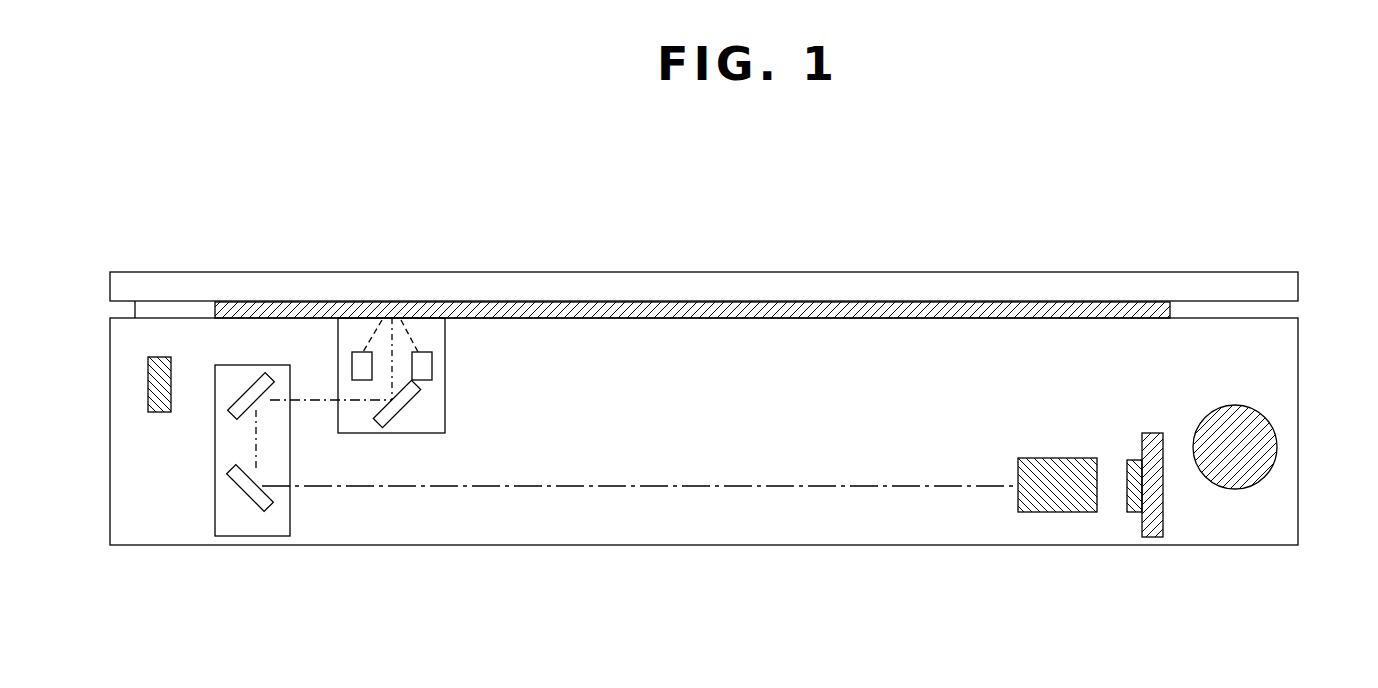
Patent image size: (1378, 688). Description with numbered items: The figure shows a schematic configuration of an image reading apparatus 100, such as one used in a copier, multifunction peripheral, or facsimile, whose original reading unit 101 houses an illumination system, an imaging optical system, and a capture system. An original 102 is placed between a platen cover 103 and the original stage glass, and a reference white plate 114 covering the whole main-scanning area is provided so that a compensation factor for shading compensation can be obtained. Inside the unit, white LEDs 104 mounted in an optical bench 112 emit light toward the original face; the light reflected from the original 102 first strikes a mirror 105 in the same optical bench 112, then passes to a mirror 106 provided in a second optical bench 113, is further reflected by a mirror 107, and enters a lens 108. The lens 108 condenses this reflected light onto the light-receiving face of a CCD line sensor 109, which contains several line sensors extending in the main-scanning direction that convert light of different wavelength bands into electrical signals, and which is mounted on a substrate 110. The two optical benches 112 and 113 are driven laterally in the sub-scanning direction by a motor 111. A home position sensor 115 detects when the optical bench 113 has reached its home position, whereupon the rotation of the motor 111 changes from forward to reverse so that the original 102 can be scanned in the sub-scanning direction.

The image reading apparatus 100 is at (1213, 137).
The original reading unit 101 is at (1299, 418).
The original 102 is at (878, 301).
The platen cover 103 is at (659, 271).
The white LEDs 104 is at (373, 353).
The mirror 105 is at (405, 410).
The mirror 106 is at (247, 387).
The mirror 107 is at (265, 508).
The lens 108 is at (1058, 512).
The CCD line sensor 109 is at (1134, 460).
The substrate 110 is at (1150, 433).
The motor 111 is at (1232, 489).
The optical bench 112 is at (446, 401).
The optical bench 113 is at (214, 490).
The reference white plate 114 is at (157, 288).
The home position sensor 115 is at (160, 414).